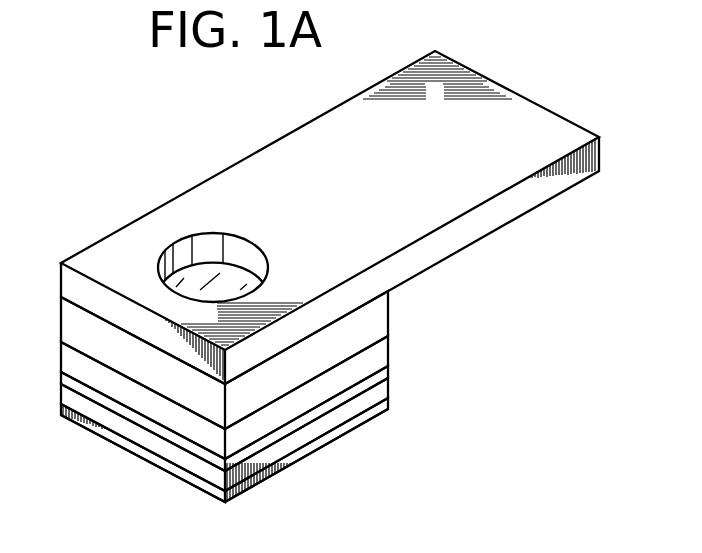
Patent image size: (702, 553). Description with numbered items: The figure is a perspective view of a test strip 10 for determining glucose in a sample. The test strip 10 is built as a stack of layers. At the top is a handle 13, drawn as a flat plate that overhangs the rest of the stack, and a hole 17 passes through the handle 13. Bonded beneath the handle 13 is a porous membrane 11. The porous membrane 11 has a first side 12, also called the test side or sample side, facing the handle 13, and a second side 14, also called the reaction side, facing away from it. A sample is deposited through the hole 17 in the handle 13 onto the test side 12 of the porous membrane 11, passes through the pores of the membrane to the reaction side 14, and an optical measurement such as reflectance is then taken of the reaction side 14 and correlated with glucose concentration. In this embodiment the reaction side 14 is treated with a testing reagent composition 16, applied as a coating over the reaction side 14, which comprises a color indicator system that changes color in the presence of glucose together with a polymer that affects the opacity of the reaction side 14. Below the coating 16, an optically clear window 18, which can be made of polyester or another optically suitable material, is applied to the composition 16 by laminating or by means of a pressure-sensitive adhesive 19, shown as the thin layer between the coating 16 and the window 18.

The test strip 10 is at (152, 182).
The handle 13 is at (535, 140).
The hole 17 is at (244, 250).
The first side 12 is at (388, 293).
The porous membrane 11 is at (388, 316).
The second side 14 is at (388, 337).
The testing reagent composition 16 is at (388, 356).
The pressure-sensitive adhesive 19 is at (388, 378).
The optically clear window 18 is at (350, 425).